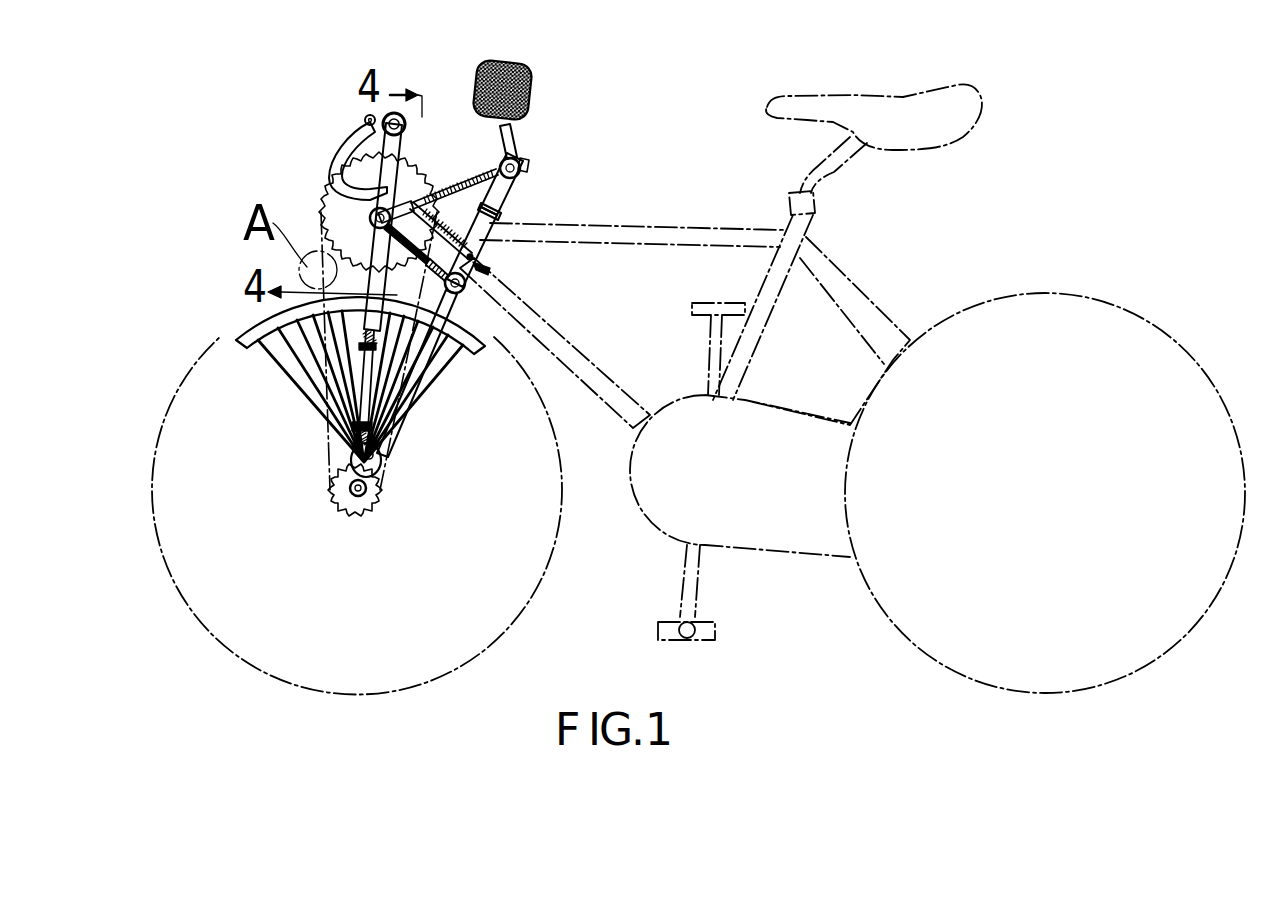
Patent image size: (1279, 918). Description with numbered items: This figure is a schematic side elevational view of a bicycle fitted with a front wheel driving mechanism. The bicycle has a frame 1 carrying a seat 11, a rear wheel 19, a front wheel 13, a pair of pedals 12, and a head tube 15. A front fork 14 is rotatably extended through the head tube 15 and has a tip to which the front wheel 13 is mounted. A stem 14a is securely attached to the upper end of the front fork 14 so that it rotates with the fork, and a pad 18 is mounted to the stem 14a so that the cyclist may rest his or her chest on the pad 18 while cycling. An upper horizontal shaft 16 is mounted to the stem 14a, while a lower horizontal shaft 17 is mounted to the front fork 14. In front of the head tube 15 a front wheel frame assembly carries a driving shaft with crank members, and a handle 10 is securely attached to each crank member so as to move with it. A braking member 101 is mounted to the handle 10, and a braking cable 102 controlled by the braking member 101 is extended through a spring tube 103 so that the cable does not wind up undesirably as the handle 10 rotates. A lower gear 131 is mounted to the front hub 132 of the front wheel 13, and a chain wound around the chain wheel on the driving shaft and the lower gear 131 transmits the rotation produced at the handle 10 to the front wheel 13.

The frame 1 is at (593, 230).
The handle 10 is at (406, 127).
The seat 11 is at (900, 94).
The pedals 12 is at (703, 377).
The front wheel 13 is at (240, 330).
The front fork 14 is at (451, 363).
The stem 14a is at (507, 197).
The head tube 15 is at (480, 233).
The upper horizontal shaft 16 is at (520, 152).
The lower horizontal shaft 17 is at (467, 308).
The pad 18 is at (527, 83).
The rear wheel 19 is at (1073, 297).
The braking member 101 is at (362, 117).
The braking cable 102 is at (331, 157).
The spring tube 103 is at (480, 243).
The lower gear 131 is at (330, 493).
The front hub 132 is at (363, 500).